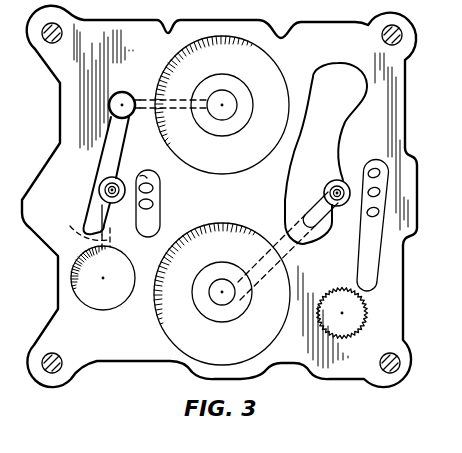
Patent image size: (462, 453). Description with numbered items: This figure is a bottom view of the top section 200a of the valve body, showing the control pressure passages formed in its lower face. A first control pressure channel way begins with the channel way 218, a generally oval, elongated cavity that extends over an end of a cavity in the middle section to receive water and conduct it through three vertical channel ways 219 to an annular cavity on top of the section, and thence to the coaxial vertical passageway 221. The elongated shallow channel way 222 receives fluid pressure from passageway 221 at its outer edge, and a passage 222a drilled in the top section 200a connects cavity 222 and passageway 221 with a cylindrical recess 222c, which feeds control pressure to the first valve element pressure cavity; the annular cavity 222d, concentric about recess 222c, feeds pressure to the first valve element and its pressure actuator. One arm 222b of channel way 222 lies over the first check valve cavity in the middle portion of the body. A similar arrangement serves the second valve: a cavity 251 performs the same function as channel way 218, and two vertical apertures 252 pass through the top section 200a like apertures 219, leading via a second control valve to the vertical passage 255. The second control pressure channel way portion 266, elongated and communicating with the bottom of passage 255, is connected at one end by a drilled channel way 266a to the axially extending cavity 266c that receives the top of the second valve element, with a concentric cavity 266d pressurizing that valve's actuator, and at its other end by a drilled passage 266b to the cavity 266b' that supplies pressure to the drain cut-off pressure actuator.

The top section 200a is at (405, 110).
The second control pressure channel way portion 266 is at (100, 167).
The channel way 266a is at (148, 99).
The drilled passage 266b is at (76, 232).
The cavity 266b' is at (74, 278).
The axially extending cavity 266c is at (224, 89).
The concentric cavity 266d is at (223, 174).
The vertical passage 255 is at (116, 179).
The cavity 251 is at (152, 221).
The vertical apertures 252 is at (153, 204).
The first pressure control channel way portion 222 is at (325, 138).
The passage 222a is at (282, 240).
The arm 222b is at (342, 72).
The cylindrical recess 222c is at (221, 278).
The annular cavity 222d is at (222, 364).
The coaxial passageway 221 is at (344, 181).
The channel way 218 is at (372, 246).
The vertical channel ways 219 is at (379, 212).